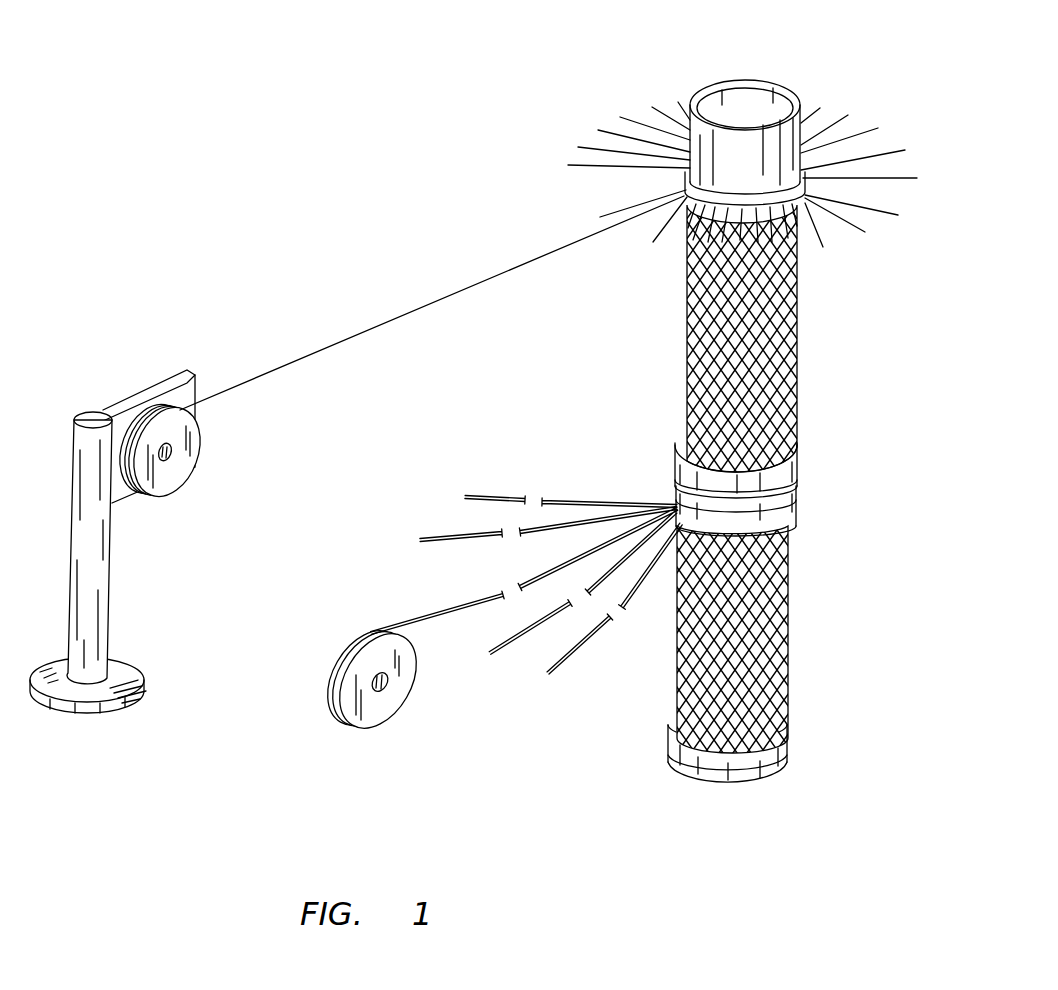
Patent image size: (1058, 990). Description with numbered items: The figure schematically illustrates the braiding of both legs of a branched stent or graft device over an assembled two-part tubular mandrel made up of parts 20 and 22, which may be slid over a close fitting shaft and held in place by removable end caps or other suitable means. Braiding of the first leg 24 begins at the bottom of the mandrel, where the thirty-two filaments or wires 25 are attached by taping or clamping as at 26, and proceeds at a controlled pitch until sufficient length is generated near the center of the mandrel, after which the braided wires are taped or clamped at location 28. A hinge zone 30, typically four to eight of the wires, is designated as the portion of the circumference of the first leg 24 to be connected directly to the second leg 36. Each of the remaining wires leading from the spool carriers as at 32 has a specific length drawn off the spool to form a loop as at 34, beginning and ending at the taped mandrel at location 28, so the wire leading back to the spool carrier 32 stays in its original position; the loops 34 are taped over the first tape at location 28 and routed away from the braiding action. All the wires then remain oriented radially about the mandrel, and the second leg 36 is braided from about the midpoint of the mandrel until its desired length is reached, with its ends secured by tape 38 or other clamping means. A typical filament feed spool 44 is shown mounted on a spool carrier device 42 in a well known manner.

The mandrel part 20 is at (686, 435).
The mandrel part 22 is at (707, 83).
The first leg 24 is at (787, 653).
The filaments or wires 25 is at (535, 262).
The attachment location 26 is at (672, 760).
The taped location 28 is at (790, 507).
The hinge zone 30 is at (765, 518).
The spool carrier 32 is at (332, 677).
The loop 34 is at (470, 603).
The second leg 36 is at (684, 331).
The tape 38 is at (687, 247).
The spool carrier device 42 is at (110, 539).
The filament feed spool 44 is at (180, 422).